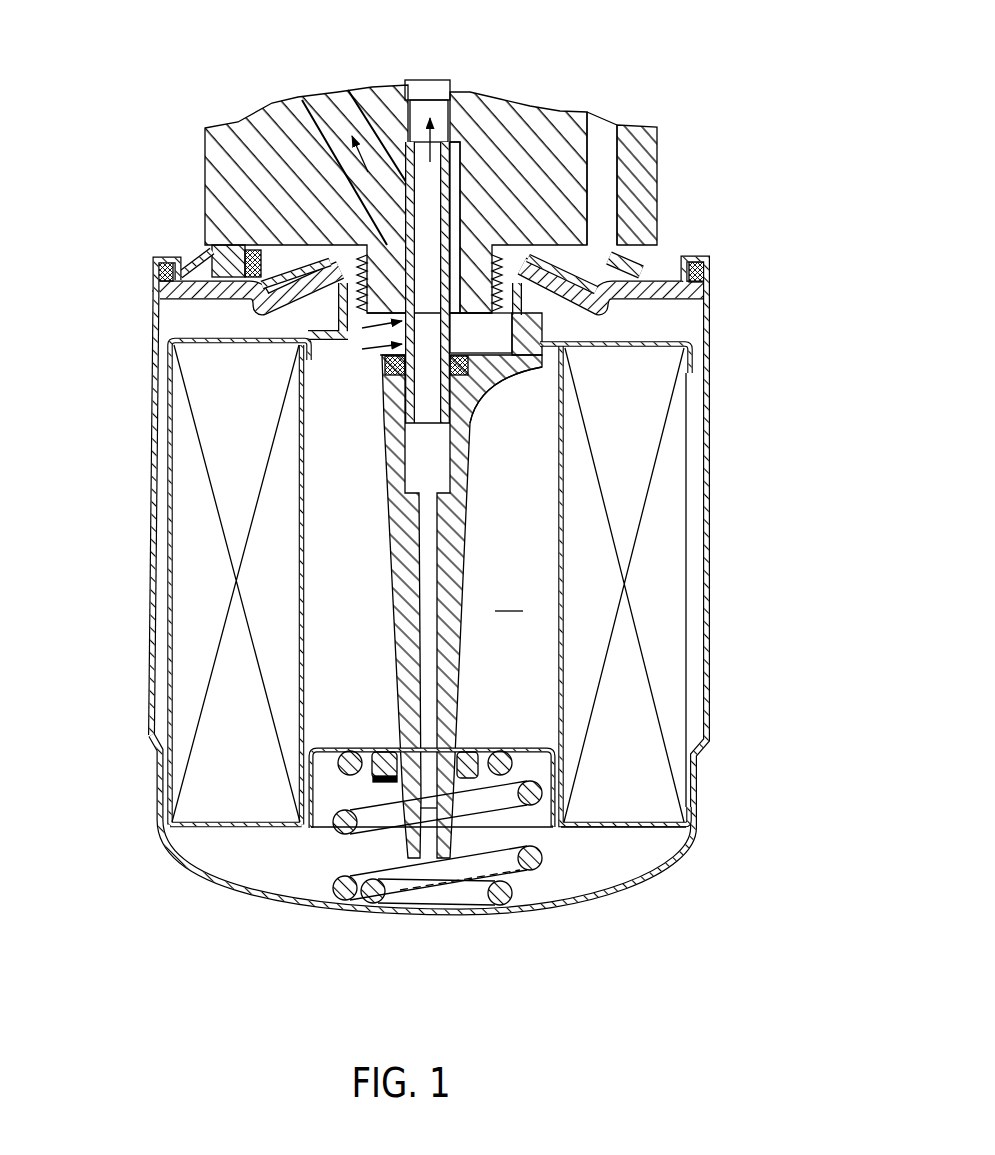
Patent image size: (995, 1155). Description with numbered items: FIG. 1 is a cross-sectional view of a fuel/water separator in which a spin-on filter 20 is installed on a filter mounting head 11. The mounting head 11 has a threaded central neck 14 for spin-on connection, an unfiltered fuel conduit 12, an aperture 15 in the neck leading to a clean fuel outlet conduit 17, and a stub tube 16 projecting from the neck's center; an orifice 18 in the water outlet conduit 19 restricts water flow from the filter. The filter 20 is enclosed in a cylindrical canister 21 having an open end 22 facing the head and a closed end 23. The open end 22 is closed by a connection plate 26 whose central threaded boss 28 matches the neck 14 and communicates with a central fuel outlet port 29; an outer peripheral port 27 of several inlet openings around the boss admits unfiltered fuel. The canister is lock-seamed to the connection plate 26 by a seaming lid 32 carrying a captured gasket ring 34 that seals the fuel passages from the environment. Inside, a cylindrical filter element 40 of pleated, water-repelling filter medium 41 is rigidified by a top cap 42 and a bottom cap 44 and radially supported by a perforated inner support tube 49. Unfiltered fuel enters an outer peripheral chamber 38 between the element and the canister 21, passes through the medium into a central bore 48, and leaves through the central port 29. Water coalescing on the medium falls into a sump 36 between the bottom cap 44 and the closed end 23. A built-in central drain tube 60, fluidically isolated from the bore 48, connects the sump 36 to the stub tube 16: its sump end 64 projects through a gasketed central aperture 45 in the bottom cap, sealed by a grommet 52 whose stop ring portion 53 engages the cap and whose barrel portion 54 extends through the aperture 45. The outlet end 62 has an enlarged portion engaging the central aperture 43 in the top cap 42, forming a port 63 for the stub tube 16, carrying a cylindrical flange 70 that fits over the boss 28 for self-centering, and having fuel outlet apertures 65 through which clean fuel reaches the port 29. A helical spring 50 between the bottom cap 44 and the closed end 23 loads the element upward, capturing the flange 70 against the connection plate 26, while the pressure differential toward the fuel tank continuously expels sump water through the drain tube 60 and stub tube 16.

The filter mounting head 11 is at (660, 152).
The unfiltered fuel conduit 12 is at (605, 130).
The threaded central neck 14 is at (550, 242).
The aperture 15 is at (457, 233).
The stub tube 16 is at (452, 338).
The clean fuel outlet conduit 17 is at (325, 100).
The orifice 18 is at (445, 98).
The water outlet conduit 19 is at (437, 80).
The spin-on filter 20 is at (140, 587).
The cylindrical canister 21 is at (712, 362).
The open end 22 is at (716, 293).
The closed end 23 is at (630, 885).
The connection plate 26 is at (185, 285).
The outer peripheral port 27 is at (305, 270).
The central threaded boss 28 is at (503, 262).
The central fuel outlet port 29 is at (392, 326).
The seaming lid 32 is at (628, 262).
The captured gasket ring 34 is at (208, 246).
The water sump 36 is at (258, 848).
The outer peripheral chamber 38 is at (162, 672).
The cylindrical filter element 40 is at (180, 540).
The filter medium 41 is at (671, 611).
The top cap 42 is at (647, 347).
The central aperture 43 is at (526, 384).
The bottom cap 44 is at (622, 820).
The central aperture 45 is at (472, 742).
The central bore 48 is at (508, 596).
The inner support tube 49 is at (568, 528).
The spring 50 is at (457, 897).
The grommet 52 is at (395, 790).
The stop ring portion 53 is at (405, 753).
The barrel portion 54 is at (353, 833).
The central drain tube 60 is at (400, 590).
The outlet end 62 is at (380, 403).
The port 63 is at (400, 352).
The sump end 64 is at (513, 750).
The fuel outlet apertures 65 is at (385, 372).
The cylindrical flange 70 is at (572, 352).